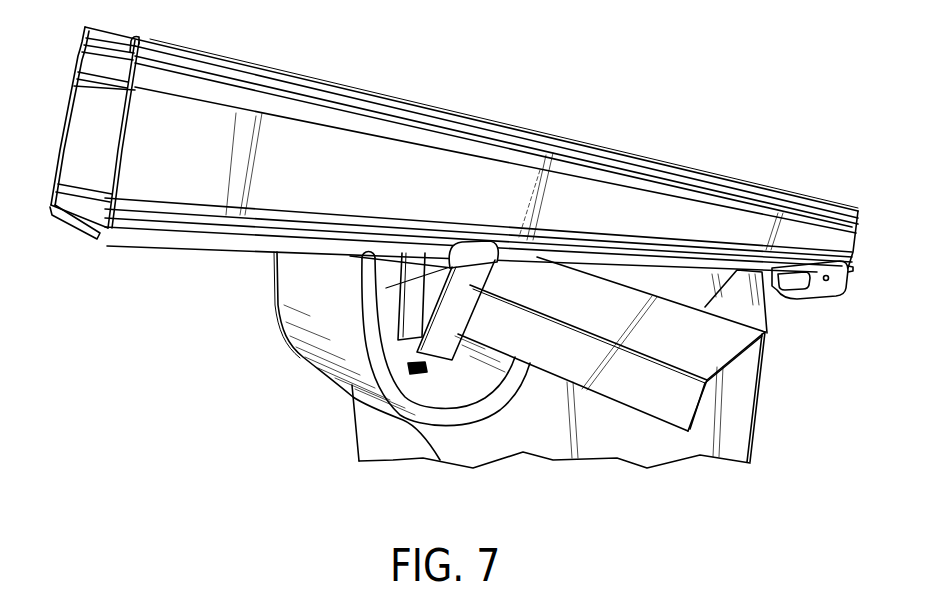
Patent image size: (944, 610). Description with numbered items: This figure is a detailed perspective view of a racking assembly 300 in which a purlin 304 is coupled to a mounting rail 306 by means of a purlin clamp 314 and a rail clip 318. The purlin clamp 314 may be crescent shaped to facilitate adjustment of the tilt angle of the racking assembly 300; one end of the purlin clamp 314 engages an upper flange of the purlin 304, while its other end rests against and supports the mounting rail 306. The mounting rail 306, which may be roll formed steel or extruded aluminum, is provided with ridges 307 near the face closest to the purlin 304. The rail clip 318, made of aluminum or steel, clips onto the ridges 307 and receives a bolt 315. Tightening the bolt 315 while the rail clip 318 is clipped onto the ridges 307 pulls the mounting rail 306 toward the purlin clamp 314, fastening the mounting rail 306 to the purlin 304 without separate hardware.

The racking assembly 300 is at (454, 273).
The purlin 304 is at (758, 421).
The mounting rail 306 is at (608, 153).
The ridges 307 is at (50, 217).
The purlin clamp 314 is at (278, 307).
The bolt 315 is at (359, 461).
The rail clip 318 is at (477, 303).